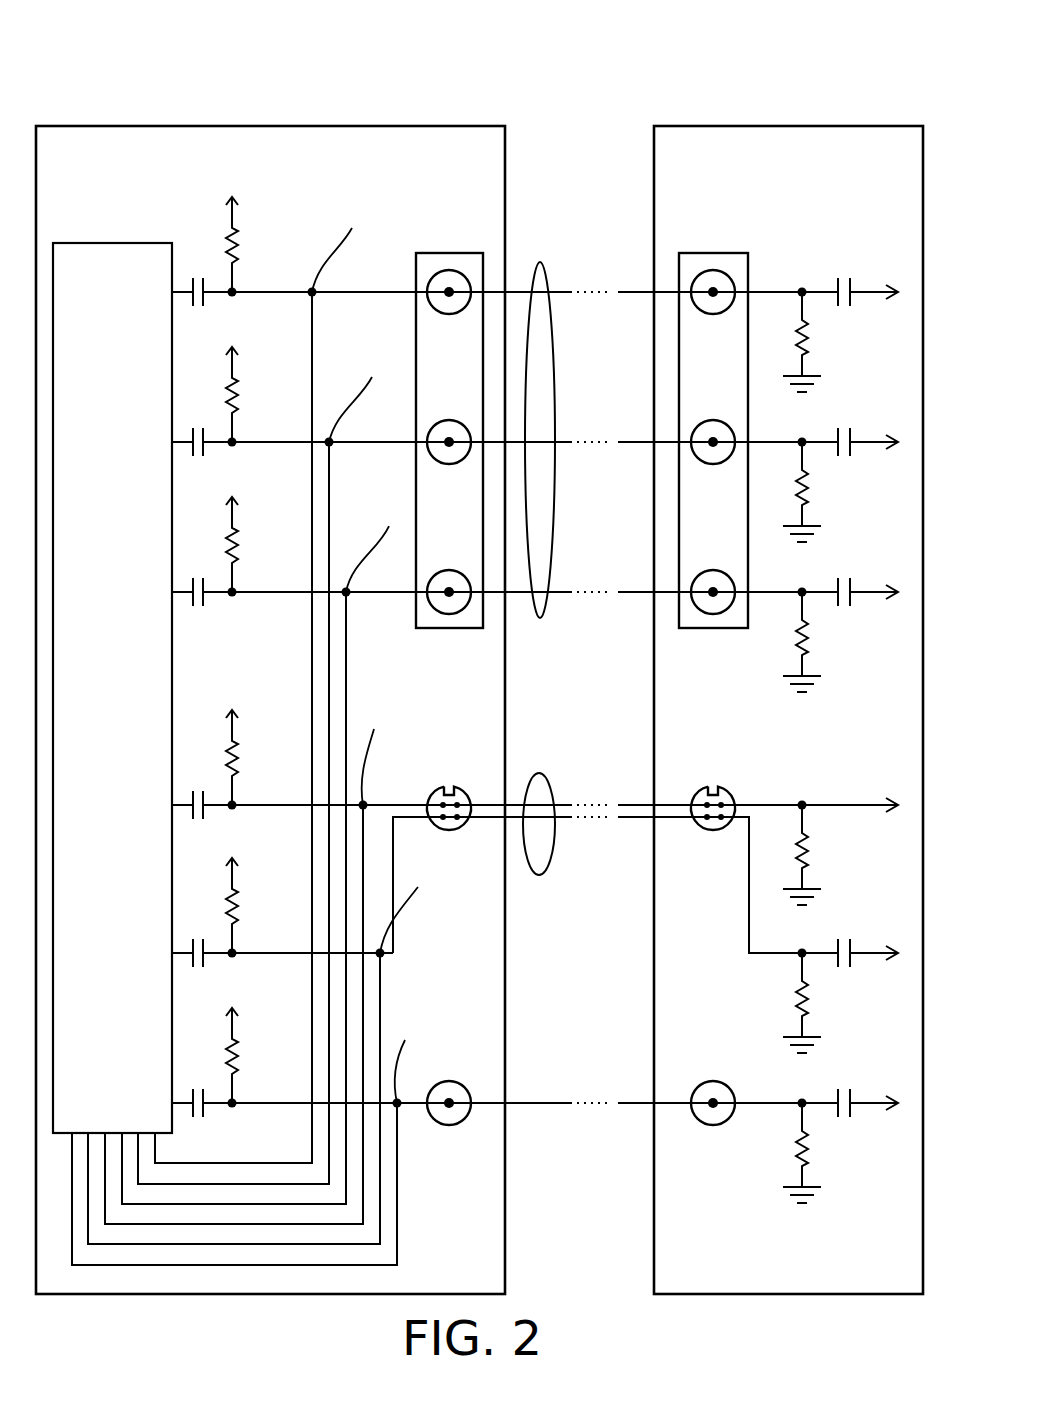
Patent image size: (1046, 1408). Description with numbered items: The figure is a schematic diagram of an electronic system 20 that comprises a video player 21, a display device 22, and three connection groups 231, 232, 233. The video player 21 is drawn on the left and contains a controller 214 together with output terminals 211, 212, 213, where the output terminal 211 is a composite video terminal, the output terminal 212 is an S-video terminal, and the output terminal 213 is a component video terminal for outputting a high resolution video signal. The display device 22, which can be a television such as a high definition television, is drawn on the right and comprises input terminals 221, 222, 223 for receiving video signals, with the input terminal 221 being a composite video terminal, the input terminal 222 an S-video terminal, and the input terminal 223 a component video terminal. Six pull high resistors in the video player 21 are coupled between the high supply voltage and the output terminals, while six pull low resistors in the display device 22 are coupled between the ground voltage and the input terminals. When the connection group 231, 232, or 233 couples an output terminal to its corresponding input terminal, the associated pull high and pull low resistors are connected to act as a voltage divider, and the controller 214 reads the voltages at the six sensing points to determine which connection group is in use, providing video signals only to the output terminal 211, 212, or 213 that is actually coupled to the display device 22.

The electronic system 20 is at (126, 84).
The video player 21 is at (274, 126).
The display device 22 is at (794, 126).
The controller 214 is at (112, 243).
The output terminal 213 is at (450, 253).
The output terminal 212 is at (440, 786).
The output terminal 211 is at (450, 1081).
The input terminal 223 is at (713, 253).
The input terminal 222 is at (704, 786).
The input terminal 221 is at (713, 1081).
The connection group 233 is at (540, 262).
The connection group 232 is at (540, 773).
The connection group 231 is at (540, 1100).